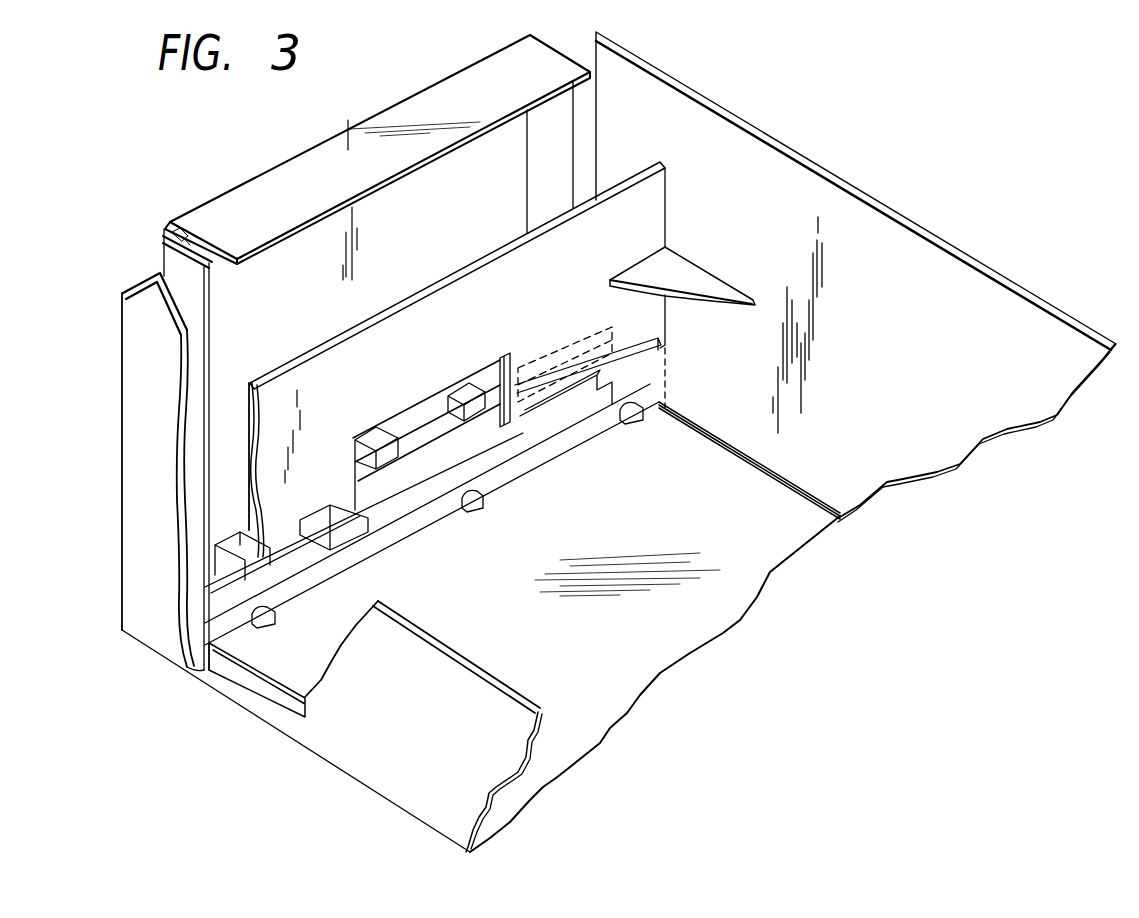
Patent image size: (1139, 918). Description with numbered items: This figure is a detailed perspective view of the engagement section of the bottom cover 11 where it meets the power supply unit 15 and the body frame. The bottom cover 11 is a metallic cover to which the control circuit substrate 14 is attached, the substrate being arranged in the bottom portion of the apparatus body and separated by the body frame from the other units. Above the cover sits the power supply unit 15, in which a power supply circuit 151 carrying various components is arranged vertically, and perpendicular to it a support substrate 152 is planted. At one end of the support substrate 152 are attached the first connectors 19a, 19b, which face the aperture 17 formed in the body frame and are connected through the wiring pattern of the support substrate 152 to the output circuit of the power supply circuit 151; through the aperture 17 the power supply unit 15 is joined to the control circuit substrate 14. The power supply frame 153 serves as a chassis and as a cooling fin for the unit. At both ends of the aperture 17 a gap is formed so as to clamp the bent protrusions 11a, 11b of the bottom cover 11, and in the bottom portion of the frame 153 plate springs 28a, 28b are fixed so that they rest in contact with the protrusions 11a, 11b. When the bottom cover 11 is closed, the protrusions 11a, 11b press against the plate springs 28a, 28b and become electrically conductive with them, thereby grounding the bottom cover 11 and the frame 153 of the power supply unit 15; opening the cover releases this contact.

The bottom cover 11 is at (277, 693).
The bent protrusion 11a is at (317, 532).
The bent protrusion 11b is at (583, 395).
The control circuit substrate 14 is at (712, 618).
The power supply unit 15 is at (178, 300).
The power supply circuit 151 is at (192, 250).
The support substrate 152 is at (416, 410).
The power supply frame 153 is at (246, 194).
The aperture 17 is at (493, 360).
The first connector 19a is at (385, 425).
The first connector 19b is at (463, 382).
The plate spring 28a is at (252, 497).
The plate spring 28b is at (547, 360).